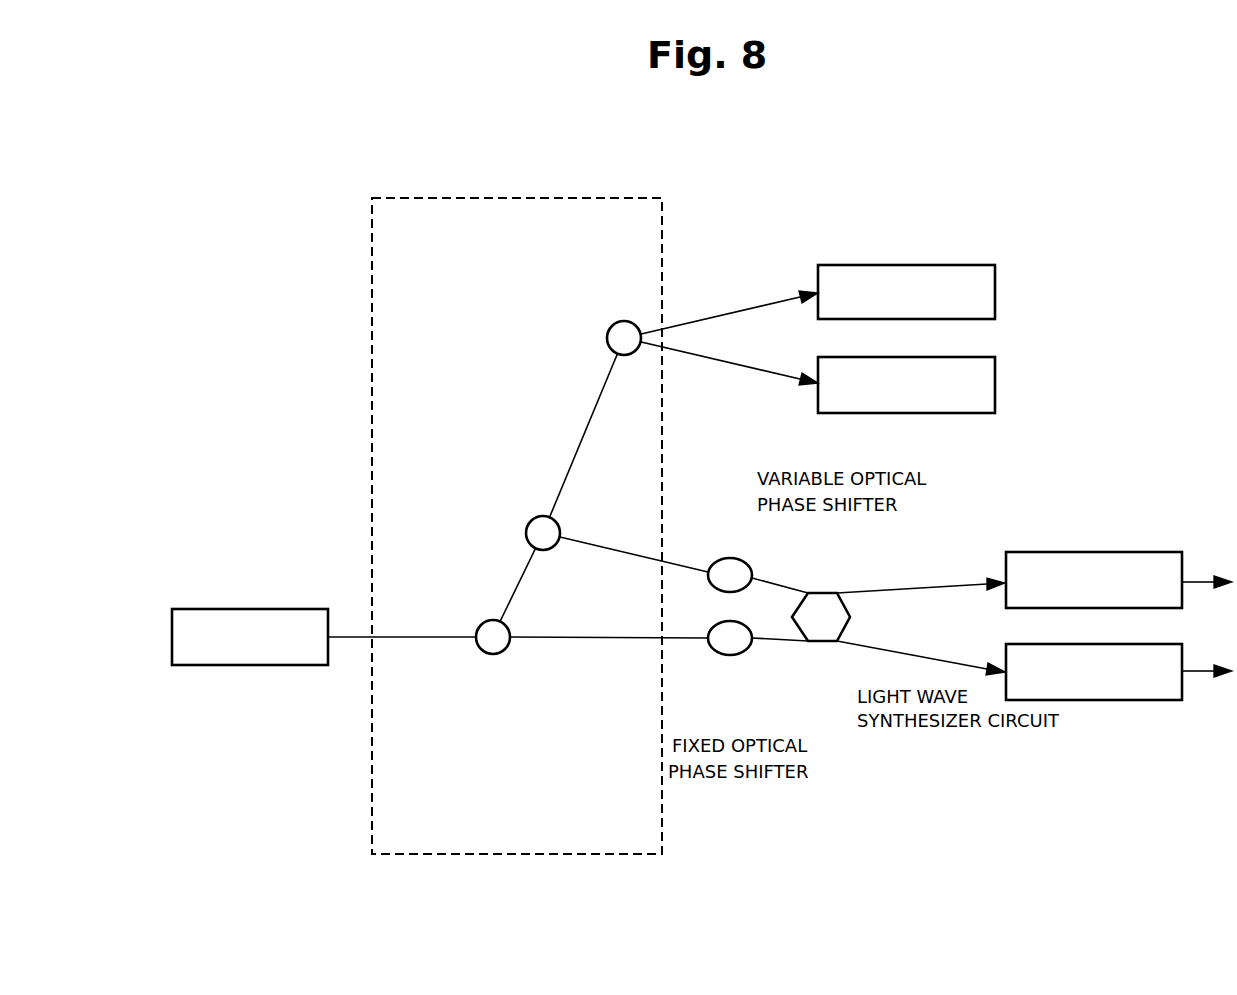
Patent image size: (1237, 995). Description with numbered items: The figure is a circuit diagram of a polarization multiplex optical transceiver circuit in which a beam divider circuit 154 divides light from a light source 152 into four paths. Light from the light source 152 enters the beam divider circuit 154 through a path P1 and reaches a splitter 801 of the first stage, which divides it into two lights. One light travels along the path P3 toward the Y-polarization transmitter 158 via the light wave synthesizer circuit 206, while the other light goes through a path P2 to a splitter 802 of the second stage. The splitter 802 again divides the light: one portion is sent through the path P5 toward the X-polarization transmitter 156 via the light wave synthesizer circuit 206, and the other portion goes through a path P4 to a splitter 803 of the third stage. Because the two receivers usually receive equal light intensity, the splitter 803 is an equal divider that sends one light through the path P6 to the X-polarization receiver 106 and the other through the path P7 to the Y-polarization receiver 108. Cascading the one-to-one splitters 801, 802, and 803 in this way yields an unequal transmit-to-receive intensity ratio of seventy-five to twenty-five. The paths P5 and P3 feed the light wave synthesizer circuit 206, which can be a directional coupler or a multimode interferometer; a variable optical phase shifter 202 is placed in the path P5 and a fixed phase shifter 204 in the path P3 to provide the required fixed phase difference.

The light source 152 is at (230, 665).
The beam divider circuit 154 is at (578, 198).
The splitter of the first stage 801 is at (493, 654).
The splitter of the second stage 802 is at (527, 522).
The splitter of the third stage 803 is at (607, 331).
The X-polarization receiver 106 is at (930, 265).
The Y-polarization receiver 108 is at (950, 413).
The variable optical phase shifter 202 is at (728, 558).
The fixed phase shifter 204 is at (730, 655).
The light wave synthesizer circuit 206 is at (820, 641).
The X-polarization transmitter 156 is at (1100, 552).
The Y-polarization transmitter 158 is at (1090, 700).
The path P1 is at (417, 636).
The path P2 is at (510, 586).
The path P3 is at (612, 638).
The path P4 is at (575, 432).
The path P5 is at (628, 548).
The path P6 is at (722, 302).
The path P7 is at (702, 358).